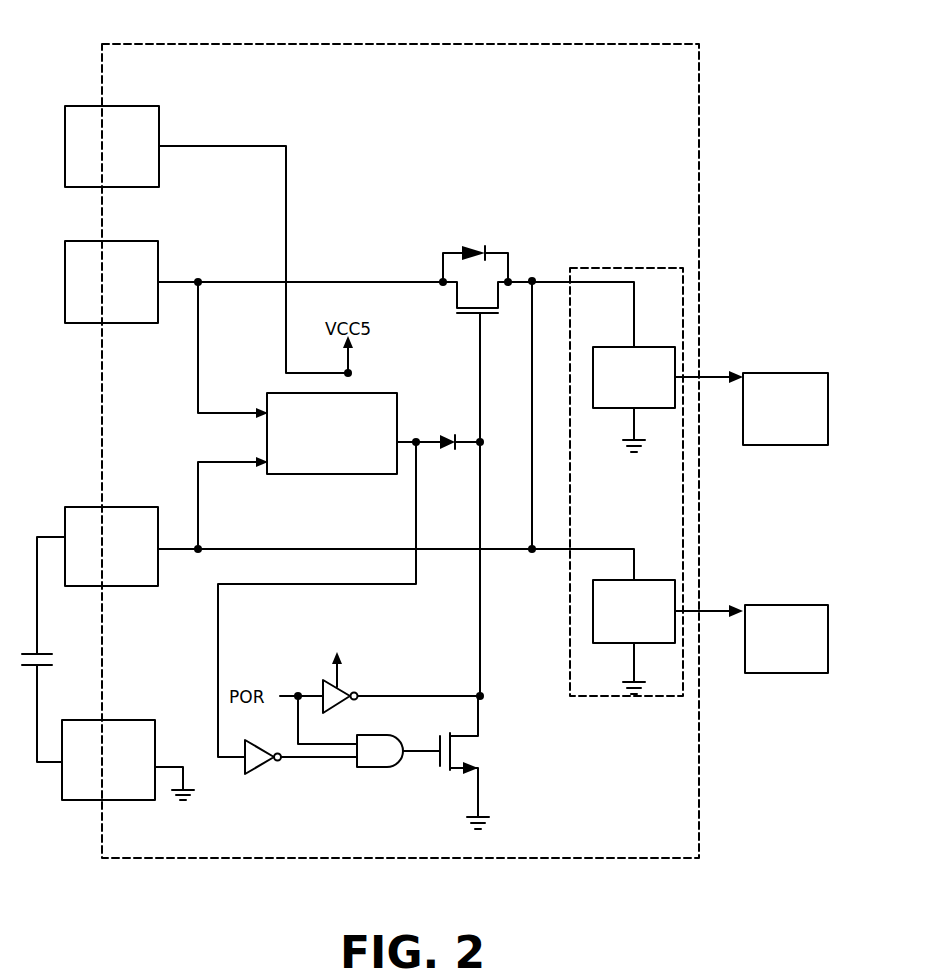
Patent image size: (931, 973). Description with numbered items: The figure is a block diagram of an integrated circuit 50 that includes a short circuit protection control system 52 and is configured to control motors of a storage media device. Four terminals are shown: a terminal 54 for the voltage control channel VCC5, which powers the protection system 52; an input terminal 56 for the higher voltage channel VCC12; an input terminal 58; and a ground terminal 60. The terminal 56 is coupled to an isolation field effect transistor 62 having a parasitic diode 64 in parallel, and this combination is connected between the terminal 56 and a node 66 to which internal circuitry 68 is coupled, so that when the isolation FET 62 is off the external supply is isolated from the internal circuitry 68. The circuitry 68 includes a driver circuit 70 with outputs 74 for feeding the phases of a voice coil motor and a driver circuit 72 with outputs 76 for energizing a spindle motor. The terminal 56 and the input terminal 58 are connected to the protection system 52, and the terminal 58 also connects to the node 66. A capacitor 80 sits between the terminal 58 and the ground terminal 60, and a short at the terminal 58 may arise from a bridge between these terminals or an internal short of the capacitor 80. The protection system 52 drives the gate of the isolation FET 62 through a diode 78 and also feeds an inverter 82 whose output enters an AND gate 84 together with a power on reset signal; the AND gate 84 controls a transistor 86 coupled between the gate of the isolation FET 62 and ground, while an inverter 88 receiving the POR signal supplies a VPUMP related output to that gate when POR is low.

The integrated circuit 50 is at (720, 70).
The short circuit protection control system 52 is at (366, 393).
The terminal 54 is at (122, 106).
The input terminal 56 is at (126, 241).
The input terminal 58 is at (118, 507).
The ground terminal 60 is at (126, 720).
The isolation field effect transistor 62 is at (445, 300).
The parasitic diode 64 is at (470, 248).
The node 66 is at (532, 281).
The internal circuitry 68 is at (612, 268).
The driver circuit 70 is at (675, 358).
The driver circuit 72 is at (643, 580).
The outputs 74 is at (720, 370).
The outputs 76 is at (713, 603).
The diode 78 is at (445, 440).
The capacitor 80 is at (52, 654).
The inverter 82 is at (255, 774).
The AND gate 84 is at (362, 767).
The transistor 86 is at (510, 757).
The inverter 88 is at (344, 684).